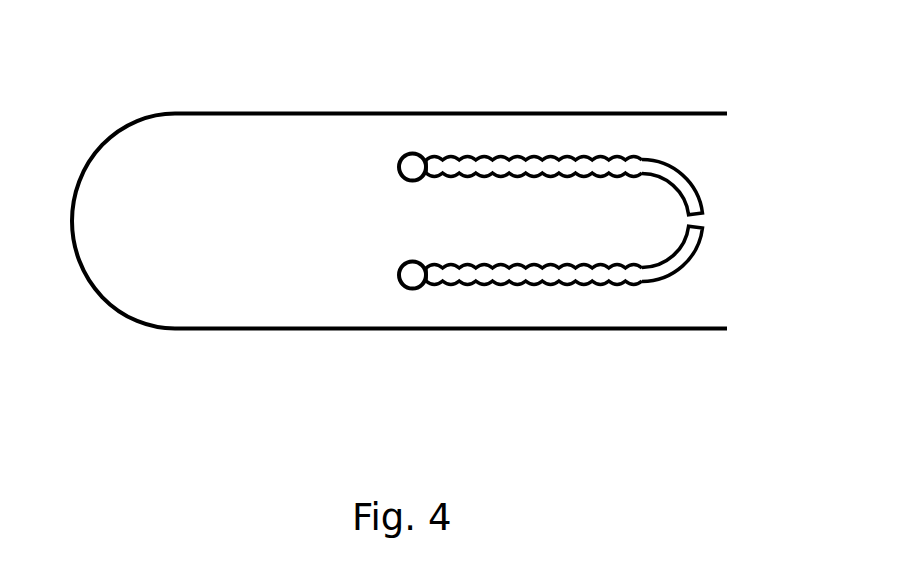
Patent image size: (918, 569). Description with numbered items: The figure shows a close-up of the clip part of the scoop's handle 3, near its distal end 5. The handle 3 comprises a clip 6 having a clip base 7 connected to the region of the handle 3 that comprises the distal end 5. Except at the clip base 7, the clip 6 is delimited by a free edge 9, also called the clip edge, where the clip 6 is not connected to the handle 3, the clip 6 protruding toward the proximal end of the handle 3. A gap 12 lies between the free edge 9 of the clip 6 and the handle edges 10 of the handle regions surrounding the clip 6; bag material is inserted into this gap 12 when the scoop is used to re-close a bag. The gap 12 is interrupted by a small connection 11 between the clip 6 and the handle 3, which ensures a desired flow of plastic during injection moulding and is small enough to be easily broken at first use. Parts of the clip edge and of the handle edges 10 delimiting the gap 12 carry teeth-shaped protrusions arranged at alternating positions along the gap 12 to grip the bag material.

The handle 3 is at (643, 140).
The distal end 5 is at (85, 150).
The clip 6 is at (493, 228).
The clip base 7 is at (412, 222).
The free edge 9 is at (588, 270).
The handle edges 10 is at (513, 282).
The small connection 11 is at (698, 220).
The gap 12 is at (670, 267).